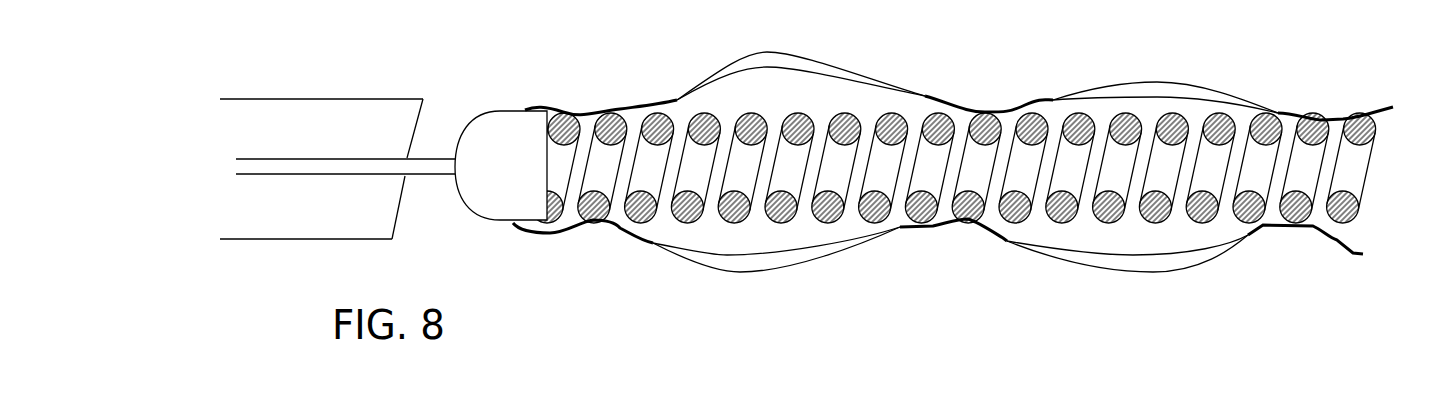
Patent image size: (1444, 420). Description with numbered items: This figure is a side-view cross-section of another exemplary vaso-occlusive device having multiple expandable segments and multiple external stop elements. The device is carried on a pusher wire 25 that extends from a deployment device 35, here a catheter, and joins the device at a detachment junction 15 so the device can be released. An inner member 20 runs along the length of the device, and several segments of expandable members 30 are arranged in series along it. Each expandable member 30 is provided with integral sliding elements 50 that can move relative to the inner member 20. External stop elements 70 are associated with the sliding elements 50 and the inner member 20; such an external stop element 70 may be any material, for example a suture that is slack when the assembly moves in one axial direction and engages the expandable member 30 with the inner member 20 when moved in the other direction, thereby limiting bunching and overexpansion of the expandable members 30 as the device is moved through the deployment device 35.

The detachment junction 15 is at (455, 180).
The inner member 20 is at (751, 113).
The pusher wire 25 is at (438, 159).
The expandable member 30 is at (707, 88).
The deployment device (catheter) 35 is at (377, 103).
The sliding portion (integral sliding element) 50 is at (993, 112).
The external stop element 70 is at (562, 111).